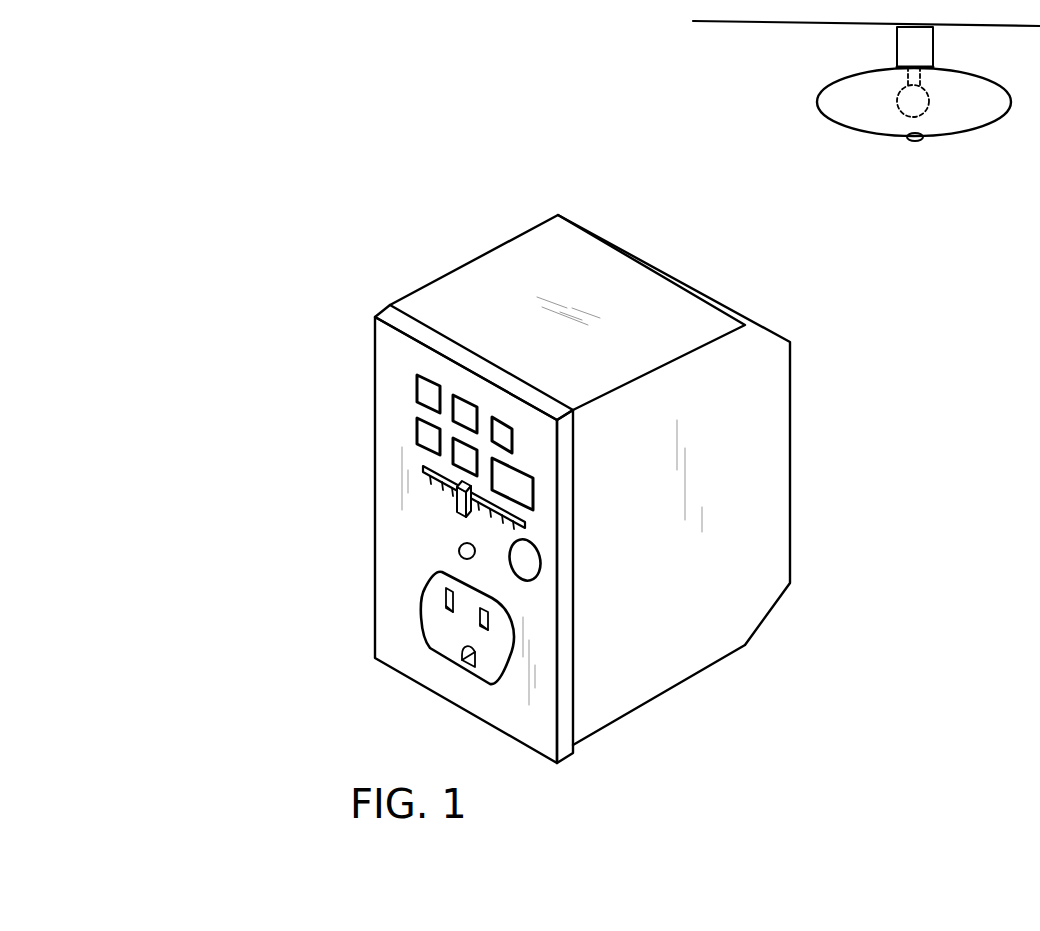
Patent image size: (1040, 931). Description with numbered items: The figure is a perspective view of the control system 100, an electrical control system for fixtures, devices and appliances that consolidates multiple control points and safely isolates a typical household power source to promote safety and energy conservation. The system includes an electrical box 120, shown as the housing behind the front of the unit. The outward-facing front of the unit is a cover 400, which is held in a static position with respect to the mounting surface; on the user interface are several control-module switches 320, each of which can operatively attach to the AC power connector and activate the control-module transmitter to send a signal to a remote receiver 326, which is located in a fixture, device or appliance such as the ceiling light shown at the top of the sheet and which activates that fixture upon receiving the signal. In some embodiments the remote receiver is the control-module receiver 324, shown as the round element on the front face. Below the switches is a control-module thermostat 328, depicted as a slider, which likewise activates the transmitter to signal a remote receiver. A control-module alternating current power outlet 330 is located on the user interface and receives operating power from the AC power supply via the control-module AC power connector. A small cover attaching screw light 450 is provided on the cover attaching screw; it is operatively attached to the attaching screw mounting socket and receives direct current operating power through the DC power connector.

The control system 100 is at (324, 167).
The electrical box 120 is at (790, 493).
The control-module switch 320 is at (418, 385).
The control-module receiver 324 is at (536, 570).
The remote receiver 326 is at (910, 42).
The control-module thermostat 328 is at (458, 503).
The control-module alternating current (AC) power outlet 330 is at (447, 645).
The cover 400 is at (537, 730).
The cover attaching screw light 450 is at (459, 555).